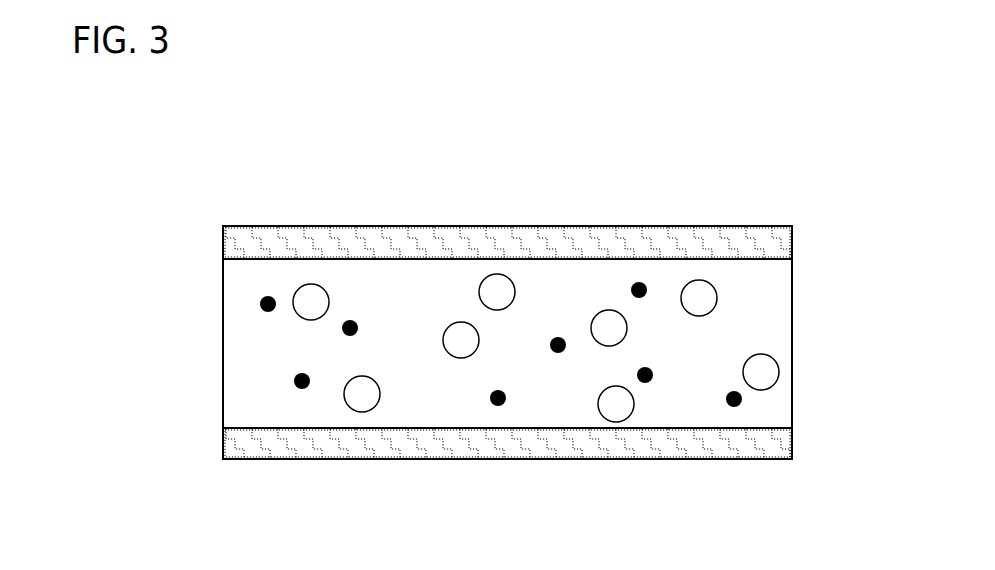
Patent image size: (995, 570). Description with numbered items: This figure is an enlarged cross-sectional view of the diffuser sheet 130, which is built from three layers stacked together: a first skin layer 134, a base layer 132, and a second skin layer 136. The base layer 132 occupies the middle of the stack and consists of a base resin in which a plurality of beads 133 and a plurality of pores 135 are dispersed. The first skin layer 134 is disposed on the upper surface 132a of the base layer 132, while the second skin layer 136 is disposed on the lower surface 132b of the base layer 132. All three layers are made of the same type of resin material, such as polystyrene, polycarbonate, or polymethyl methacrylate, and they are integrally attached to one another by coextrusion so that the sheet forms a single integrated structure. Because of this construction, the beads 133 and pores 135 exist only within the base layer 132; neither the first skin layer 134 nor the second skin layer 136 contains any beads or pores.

The diffuser sheet 130 is at (234, 187).
The base layer 132 is at (247, 353).
The upper surface of the base layer 132a is at (717, 247).
The lower surface of the base layer 132b is at (686, 441).
The beads 133 is at (302, 389).
The first skin layer 134 is at (437, 226).
The pores 135 is at (311, 284).
The second skin layer 136 is at (460, 442).